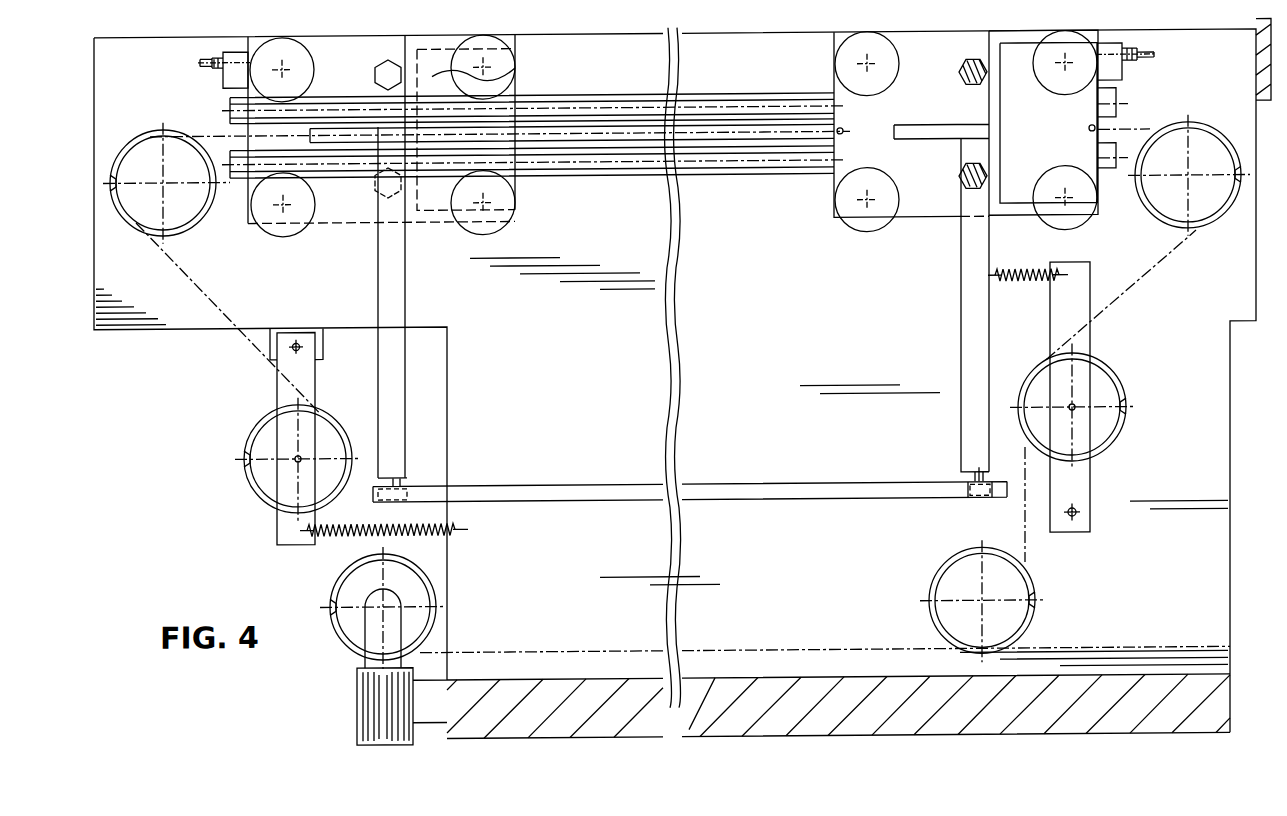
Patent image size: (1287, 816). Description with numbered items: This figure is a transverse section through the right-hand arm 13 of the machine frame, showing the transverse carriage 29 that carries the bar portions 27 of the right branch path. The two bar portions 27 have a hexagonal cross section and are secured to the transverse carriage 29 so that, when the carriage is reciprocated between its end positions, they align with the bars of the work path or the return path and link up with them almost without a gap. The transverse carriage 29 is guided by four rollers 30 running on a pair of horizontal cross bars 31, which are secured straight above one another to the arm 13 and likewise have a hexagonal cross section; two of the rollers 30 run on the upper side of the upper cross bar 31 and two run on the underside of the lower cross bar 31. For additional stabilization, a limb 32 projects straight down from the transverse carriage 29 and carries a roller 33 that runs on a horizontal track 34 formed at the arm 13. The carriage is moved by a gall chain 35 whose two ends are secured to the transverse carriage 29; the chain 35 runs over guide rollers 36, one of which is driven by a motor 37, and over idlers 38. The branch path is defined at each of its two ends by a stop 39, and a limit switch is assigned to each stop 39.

The arm 13 is at (1210, 574).
The bar portions 27 is at (373, 74).
The transverse carriage 29 is at (940, 34).
The rollers 30 is at (865, 46).
The cross bars 31 is at (738, 102).
The limb 32 is at (960, 351).
The roller 33 is at (973, 506).
The horizontal track 34 is at (775, 506).
The gall chain 35 is at (220, 300).
The guide rollers 36 is at (190, 207).
The motor 37 is at (372, 720).
The idlers 38 is at (258, 485).
The stop 39 is at (218, 70).